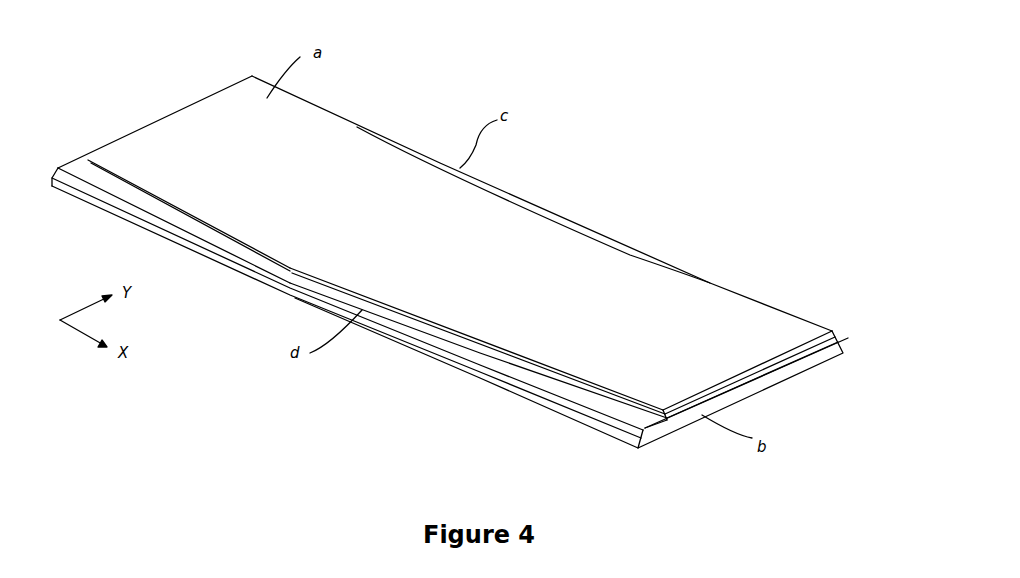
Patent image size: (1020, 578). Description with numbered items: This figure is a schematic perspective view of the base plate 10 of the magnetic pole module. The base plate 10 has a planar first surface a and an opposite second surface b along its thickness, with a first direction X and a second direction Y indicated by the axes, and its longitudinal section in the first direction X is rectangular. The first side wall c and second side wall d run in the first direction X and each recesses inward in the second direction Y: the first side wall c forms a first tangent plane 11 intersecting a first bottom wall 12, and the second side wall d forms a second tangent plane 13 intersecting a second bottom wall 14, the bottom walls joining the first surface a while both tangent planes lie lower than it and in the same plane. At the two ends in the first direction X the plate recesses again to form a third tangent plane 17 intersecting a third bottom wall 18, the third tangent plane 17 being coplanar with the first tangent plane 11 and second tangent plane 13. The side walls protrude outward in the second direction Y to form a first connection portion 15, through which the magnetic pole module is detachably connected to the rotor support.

The base plate 10 is at (510, 33).
The first tangent plane 11 is at (558, 217).
The first bottom wall 12 is at (485, 203).
The second tangent plane 13 is at (133, 193).
The second bottom wall 14 is at (100, 157).
The first connection portion 15 is at (845, 345).
The third tangent plane 17 is at (763, 373).
The third bottom wall 18 is at (162, 118).